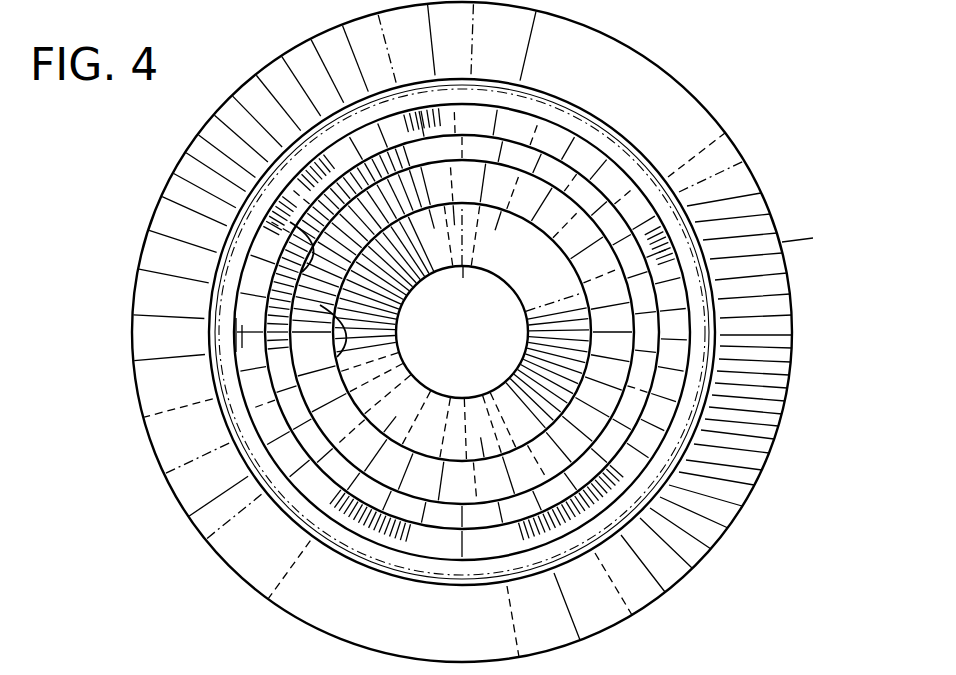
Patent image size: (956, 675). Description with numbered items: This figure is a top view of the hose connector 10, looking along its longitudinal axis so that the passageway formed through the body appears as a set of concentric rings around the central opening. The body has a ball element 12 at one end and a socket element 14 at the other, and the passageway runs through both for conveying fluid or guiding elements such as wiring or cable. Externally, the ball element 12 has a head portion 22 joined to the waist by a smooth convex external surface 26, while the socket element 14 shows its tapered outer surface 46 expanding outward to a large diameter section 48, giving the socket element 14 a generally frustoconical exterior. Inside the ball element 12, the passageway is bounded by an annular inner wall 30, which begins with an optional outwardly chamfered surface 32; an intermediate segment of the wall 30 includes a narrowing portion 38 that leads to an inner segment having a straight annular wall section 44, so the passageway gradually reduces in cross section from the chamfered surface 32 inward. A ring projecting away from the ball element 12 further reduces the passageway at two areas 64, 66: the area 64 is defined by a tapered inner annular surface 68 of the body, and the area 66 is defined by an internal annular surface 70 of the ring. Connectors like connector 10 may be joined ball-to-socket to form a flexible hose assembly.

The connector 10 is at (792, 72).
The ball element 12 is at (562, 106).
The socket element 14 is at (757, 482).
The head portion 22 is at (628, 137).
The convex external surface 26 is at (691, 232).
The annular inner wall 30 is at (290, 222).
The chamfered surface 32 is at (648, 286).
The narrowing portion 38 is at (618, 330).
The straight annular wall section 44 is at (320, 305).
The tapered outer surface 46 is at (711, 170).
The large diameter section 48 is at (705, 548).
The reduced area 64 is at (533, 257).
The reduced area 66 is at (482, 362).
The tapered inner annular surface 68 is at (578, 352).
The internal annular surface 70 is at (463, 267).